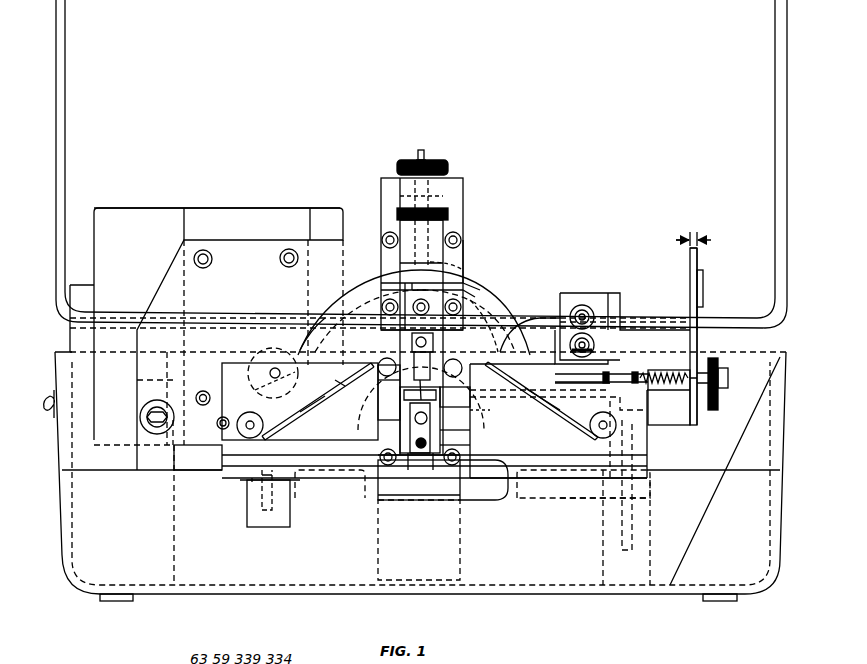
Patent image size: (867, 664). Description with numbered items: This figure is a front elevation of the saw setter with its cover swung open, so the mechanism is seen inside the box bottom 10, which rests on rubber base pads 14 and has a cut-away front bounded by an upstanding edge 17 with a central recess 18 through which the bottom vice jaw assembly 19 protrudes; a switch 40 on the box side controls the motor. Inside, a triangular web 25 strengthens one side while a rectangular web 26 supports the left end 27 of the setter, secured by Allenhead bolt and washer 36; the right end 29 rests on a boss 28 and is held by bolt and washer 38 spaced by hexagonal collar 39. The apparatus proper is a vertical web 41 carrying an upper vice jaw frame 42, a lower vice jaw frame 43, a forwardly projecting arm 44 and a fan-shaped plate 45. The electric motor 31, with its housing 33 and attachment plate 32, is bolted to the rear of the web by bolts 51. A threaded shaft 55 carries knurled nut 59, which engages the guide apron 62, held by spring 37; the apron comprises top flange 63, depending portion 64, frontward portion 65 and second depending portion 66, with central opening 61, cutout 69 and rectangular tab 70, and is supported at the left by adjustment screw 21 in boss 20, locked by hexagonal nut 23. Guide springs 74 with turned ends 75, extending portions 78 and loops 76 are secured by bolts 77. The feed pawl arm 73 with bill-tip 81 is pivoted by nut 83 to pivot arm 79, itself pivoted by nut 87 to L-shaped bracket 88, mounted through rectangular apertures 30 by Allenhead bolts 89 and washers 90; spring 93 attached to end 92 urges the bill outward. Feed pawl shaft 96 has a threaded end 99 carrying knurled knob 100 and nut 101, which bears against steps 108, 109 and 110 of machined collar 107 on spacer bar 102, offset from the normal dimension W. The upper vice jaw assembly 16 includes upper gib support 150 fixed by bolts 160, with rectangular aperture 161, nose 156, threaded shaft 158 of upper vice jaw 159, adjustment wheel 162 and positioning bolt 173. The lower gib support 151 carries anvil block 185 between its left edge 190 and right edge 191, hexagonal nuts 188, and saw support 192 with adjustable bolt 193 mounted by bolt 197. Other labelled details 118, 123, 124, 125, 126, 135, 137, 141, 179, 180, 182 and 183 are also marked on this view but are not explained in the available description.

The bottom 10 is at (318, 598).
The base pads 14 is at (118, 603).
The upper vice jaw assembly 16 is at (469, 300).
The upstanding edge 17 is at (114, 472).
The central recess 18 is at (490, 502).
The bottom vice jaw assembly 19 is at (400, 462).
The protruding boss 20 is at (247, 512).
The adjustment screw 21 is at (272, 512).
The hexagonal nut 23 is at (247, 482).
The triangular web 25 is at (778, 402).
The rectangular web 26 is at (58, 448).
The left end 27 is at (136, 332).
The boss 28 is at (640, 585).
The right end 29 is at (690, 330).
The apertures 30 is at (575, 312).
The electric motor 31 is at (170, 207).
The attachment plate 32 is at (292, 215).
The housing 33 is at (137, 214).
The Allenhead bolt and washer 36 is at (152, 436).
The spring 37 is at (215, 423).
The Allenhead bolt and washer 38 is at (612, 397).
The hexagonal collar 39 is at (571, 421).
The switch 40 is at (50, 402).
The vertical web 41 is at (349, 238).
The upper vice jaw frame 42 is at (466, 204).
The lower vice jaw frame 43 is at (382, 582).
The forwardly projecting arm 44 is at (650, 488).
The fan-shaped plate 45 is at (683, 425).
The bolts 51 is at (207, 268).
The threaded shaft 55 is at (270, 374).
The knurled nut 59 is at (266, 355).
The central rectangular opening 61 is at (462, 400).
The guide apron 62 is at (220, 479).
The top flange 63 is at (237, 365).
The downwardly depending portion 64 is at (218, 450).
The frontwardly extending portion 65 is at (530, 472).
The second depending portion 66 is at (308, 478).
The cutout 69 is at (578, 378).
The rectangular tab 70 is at (382, 405).
The feed pawl arm 73 is at (634, 371).
The springs 74 is at (313, 392).
The inwardly turned ends 75 is at (363, 328).
The spring loops 76 is at (268, 436).
The bolts 77 is at (248, 412).
The extending portion 78 is at (515, 382).
The feed pawl pivot arm 79 is at (606, 371).
The bill-tip 81 is at (462, 390).
The nut 83 is at (567, 397).
The nut 87 is at (566, 352).
The L-shaped supporting bracket 88 is at (600, 295).
The Allenhead bolts 89 is at (583, 305).
The washer 90 is at (570, 305).
The end 92 is at (662, 372).
The spring 93 is at (660, 384).
The feed pawl shaft 96 is at (528, 322).
The threaded end 99 is at (726, 378).
The knurled knob 100 is at (718, 384).
The nut 101 is at (700, 365).
The feed pawl spacer bar 102 is at (688, 255).
The machined collar 107 is at (703, 266).
The step 108 is at (704, 282).
The step 109 is at (703, 303).
The step 110 is at (700, 325).
The blade 118 is at (444, 358).
The arc 123 is at (340, 418).
The lever 124 is at (484, 286).
The link 125 is at (470, 417).
The arc 126 is at (480, 303).
The arc 135 is at (318, 312).
The screw 137 is at (412, 304).
The arm 141 is at (474, 291).
The upper gib support 150 is at (466, 253).
The lower gib support 151 is at (421, 496).
The nose 156 is at (405, 186).
The threaded shaft 158 is at (421, 150).
The upper vice jaw 159 is at (413, 309).
The bolts 160 is at (386, 233).
The rectangular horizontal aperture 161 is at (419, 300).
The upper vice jaw adjustment wheel 162 is at (398, 214).
The bolt 173 is at (412, 304).
The slot 179 is at (450, 265).
The bar 180 is at (400, 197).
The knob 182 is at (444, 159).
The stem 183 is at (416, 158).
The anvil block 185 is at (446, 445).
The hexagonal nuts 188 is at (452, 486).
The left edge 190 is at (398, 437).
The right edge 191 is at (446, 433).
The saw support 192 is at (409, 470).
The adjustable bolt 193 is at (338, 392).
The bolt 197 is at (430, 470).
The normal overall dimension W is at (684, 238).